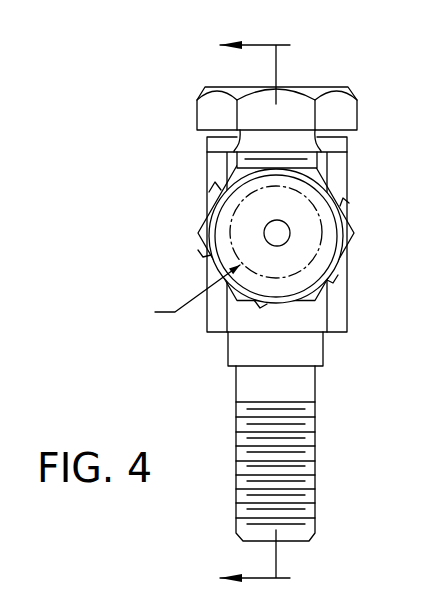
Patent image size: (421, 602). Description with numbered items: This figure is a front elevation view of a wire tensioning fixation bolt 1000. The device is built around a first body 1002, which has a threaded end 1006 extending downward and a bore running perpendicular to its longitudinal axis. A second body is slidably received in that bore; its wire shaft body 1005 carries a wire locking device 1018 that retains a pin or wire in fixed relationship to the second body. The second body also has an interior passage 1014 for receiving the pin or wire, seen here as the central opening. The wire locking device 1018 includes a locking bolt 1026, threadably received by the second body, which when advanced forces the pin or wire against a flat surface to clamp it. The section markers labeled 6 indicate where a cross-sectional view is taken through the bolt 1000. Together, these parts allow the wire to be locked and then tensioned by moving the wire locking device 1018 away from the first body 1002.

The wire tensioning fixation bolt 1000 is at (150, 203).
The wire locking device 1018 is at (207, 88).
The first body 1002 is at (206, 156).
The locking bolt 1026 is at (305, 163).
The interior passage 1014 is at (281, 236).
The wire shaft body 1005 is at (214, 334).
The threaded end 1006 is at (310, 451).
The section line 6- 6 is at (261, 312).